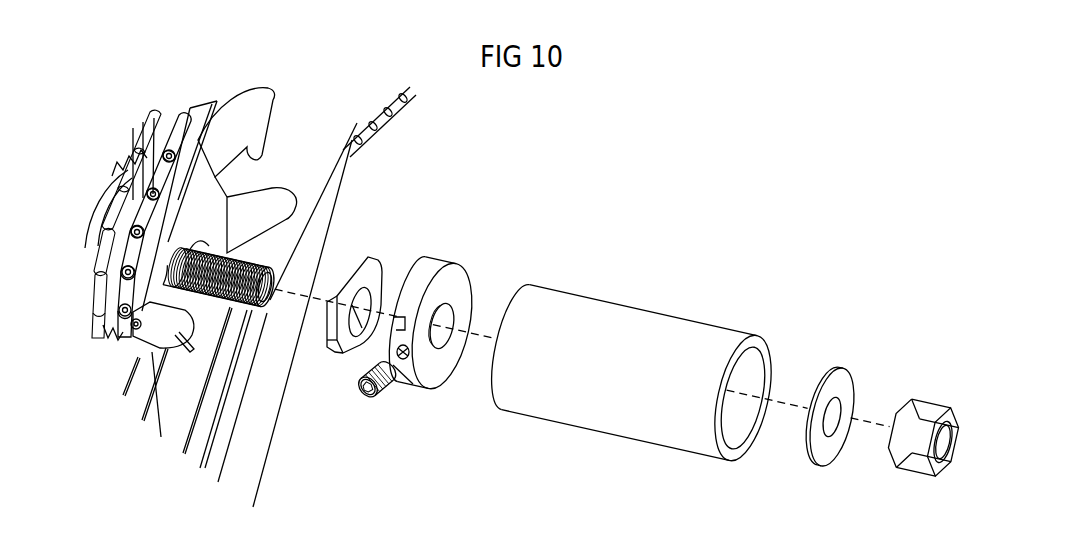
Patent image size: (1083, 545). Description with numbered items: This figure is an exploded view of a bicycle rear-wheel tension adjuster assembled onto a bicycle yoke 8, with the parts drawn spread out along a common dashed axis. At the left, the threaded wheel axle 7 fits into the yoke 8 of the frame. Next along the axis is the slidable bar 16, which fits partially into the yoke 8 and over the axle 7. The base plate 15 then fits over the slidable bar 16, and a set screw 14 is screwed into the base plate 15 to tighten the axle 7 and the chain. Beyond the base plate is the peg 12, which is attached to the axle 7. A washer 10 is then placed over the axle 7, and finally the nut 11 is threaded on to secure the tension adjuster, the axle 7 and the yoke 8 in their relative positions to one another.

The wheel axle 7 is at (268, 302).
The yoke 8 is at (202, 193).
The washer 10 is at (847, 362).
The nut 11 is at (930, 393).
The peg 12 is at (643, 298).
The set screw 14 is at (382, 398).
The base plate 15 is at (460, 260).
The slidable bar 16 is at (380, 252).